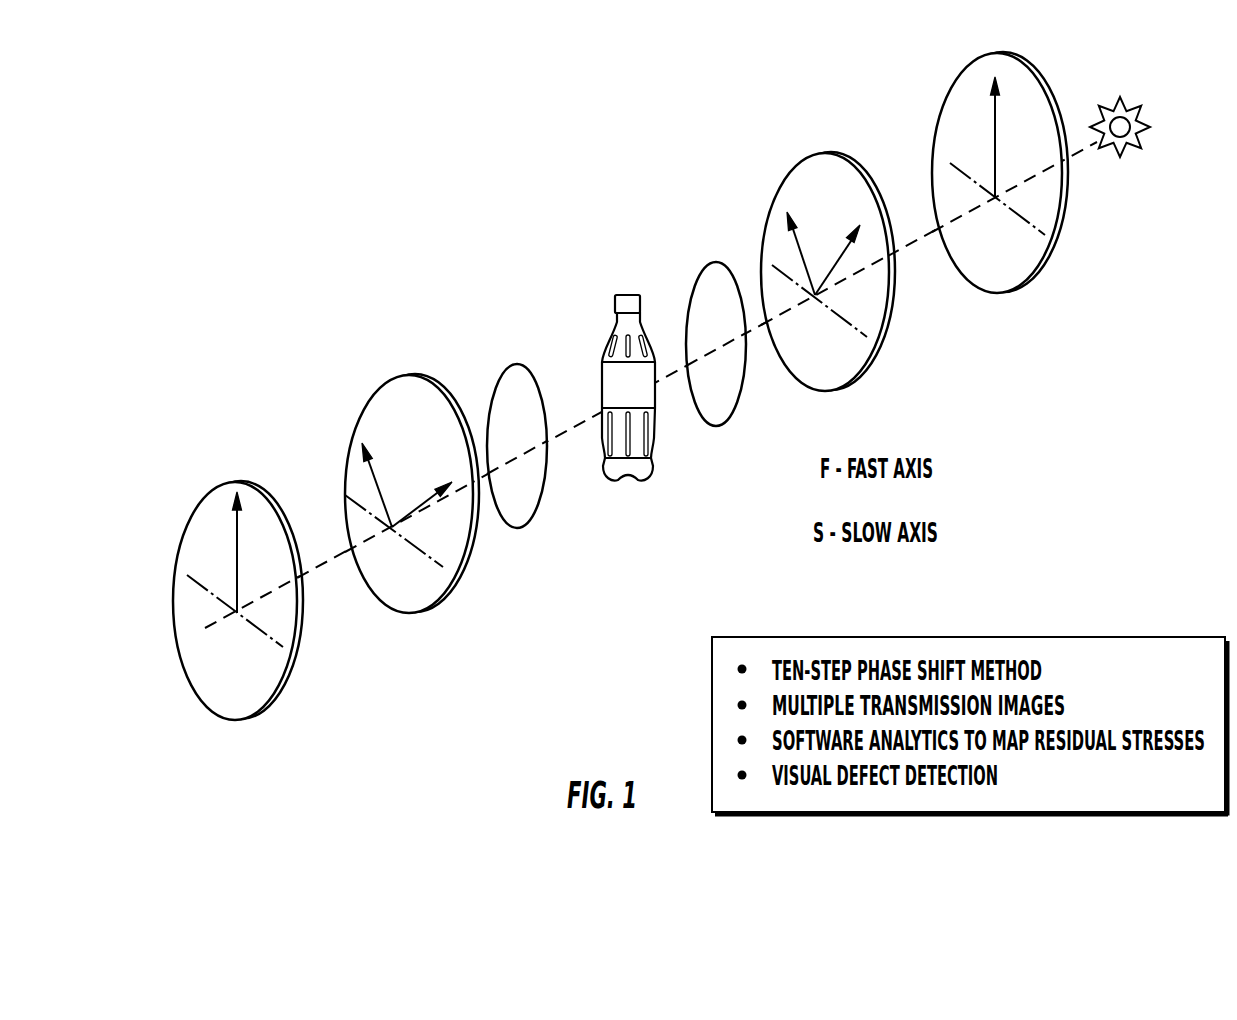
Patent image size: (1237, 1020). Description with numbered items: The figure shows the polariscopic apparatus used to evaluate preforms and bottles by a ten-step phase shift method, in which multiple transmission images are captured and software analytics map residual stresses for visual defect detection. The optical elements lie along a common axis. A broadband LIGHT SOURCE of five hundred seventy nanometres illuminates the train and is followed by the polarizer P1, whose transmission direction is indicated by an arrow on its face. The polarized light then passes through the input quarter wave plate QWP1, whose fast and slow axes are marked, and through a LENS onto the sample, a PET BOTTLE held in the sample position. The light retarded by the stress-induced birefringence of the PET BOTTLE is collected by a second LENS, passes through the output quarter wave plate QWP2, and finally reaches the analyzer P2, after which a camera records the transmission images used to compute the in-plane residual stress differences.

The polarizer P1 is at (990, 172).
The analyzer P2 is at (255, 581).
The input quarter wave plate QWP1 is at (858, 271).
The output quarter wave plate QWP2 is at (450, 493).
The lens LENS is at (635, 402).
The PET bottle PET BOTTLE is at (668, 407).
The broadband light source LIGHT SOURCE is at (1161, 150).